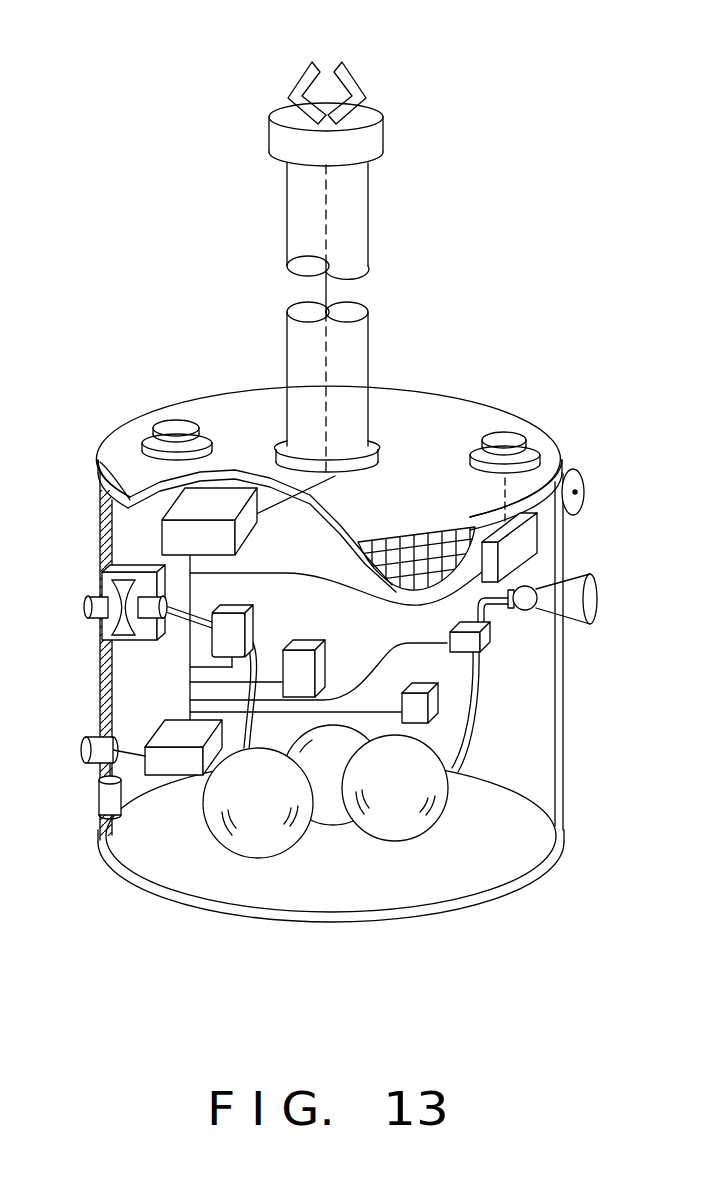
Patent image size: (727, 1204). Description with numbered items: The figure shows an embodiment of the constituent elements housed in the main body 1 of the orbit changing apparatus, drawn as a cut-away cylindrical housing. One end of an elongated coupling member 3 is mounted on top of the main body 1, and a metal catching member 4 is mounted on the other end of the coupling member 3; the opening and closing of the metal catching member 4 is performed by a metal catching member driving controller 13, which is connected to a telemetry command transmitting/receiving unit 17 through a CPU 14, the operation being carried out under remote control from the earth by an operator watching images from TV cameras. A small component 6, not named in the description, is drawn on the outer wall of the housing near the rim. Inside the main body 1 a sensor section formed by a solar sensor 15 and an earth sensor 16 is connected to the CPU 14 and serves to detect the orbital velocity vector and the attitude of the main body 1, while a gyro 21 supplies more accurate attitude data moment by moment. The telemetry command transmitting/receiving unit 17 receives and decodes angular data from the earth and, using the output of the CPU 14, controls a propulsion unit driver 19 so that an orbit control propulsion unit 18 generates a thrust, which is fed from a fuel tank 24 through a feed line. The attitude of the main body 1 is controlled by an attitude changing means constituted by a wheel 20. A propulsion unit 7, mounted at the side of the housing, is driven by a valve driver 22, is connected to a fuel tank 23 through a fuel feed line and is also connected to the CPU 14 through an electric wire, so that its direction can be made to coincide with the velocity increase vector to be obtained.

The main body 1 is at (490, 397).
The elongated coupling member 3 is at (368, 236).
The metal catching member 4 is at (364, 88).
The indicator lamp 6 is at (586, 495).
The propulsion unit 7 is at (598, 603).
The metal catching member driving controller 13 is at (185, 510).
The CPU 14 is at (165, 722).
The solar sensor 15 is at (83, 741).
The earth sensor 16 is at (98, 803).
The telemetry command transmitting/receiving unit 17 is at (524, 550).
The orbit control propulsion unit 18 is at (95, 598).
The propulsion unit driver 19 is at (250, 637).
The wheel 20 is at (328, 650).
The gyro 21 is at (444, 666).
The valve driver 22 is at (490, 637).
The fuel tank 23 is at (398, 825).
The fuel tank 24 is at (278, 845).